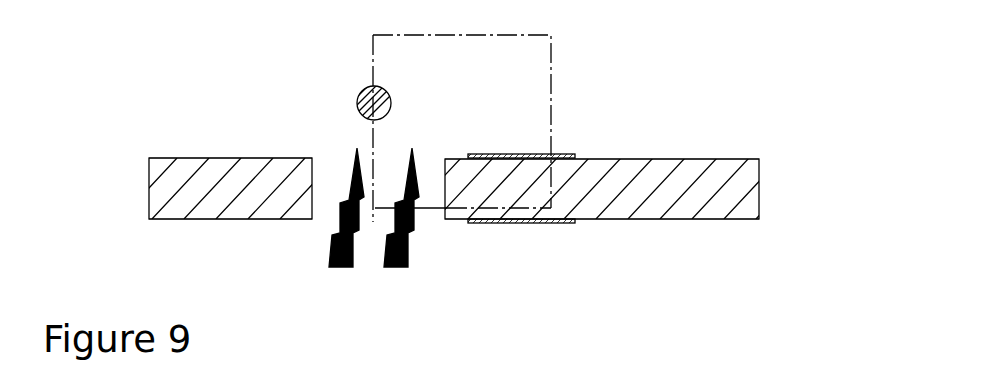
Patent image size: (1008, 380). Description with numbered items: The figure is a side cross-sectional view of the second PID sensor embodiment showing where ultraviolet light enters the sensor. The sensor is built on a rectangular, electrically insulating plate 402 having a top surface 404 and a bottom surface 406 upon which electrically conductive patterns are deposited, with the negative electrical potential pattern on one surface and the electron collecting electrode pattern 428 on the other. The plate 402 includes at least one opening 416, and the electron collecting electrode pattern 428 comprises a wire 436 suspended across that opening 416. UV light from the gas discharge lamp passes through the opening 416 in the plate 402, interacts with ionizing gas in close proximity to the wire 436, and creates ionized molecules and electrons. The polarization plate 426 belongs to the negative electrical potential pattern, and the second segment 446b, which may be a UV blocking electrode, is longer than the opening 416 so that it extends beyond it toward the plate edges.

The plate 402 is at (149, 203).
The top surface 404 is at (212, 159).
The bottom surface 406 is at (240, 219).
The opening 416 is at (431, 239).
The polarization plate 426 is at (507, 155).
The electron collecting electrode pattern 428 is at (348, 78).
The wire 436 is at (357, 110).
The second segment 446b is at (510, 223).